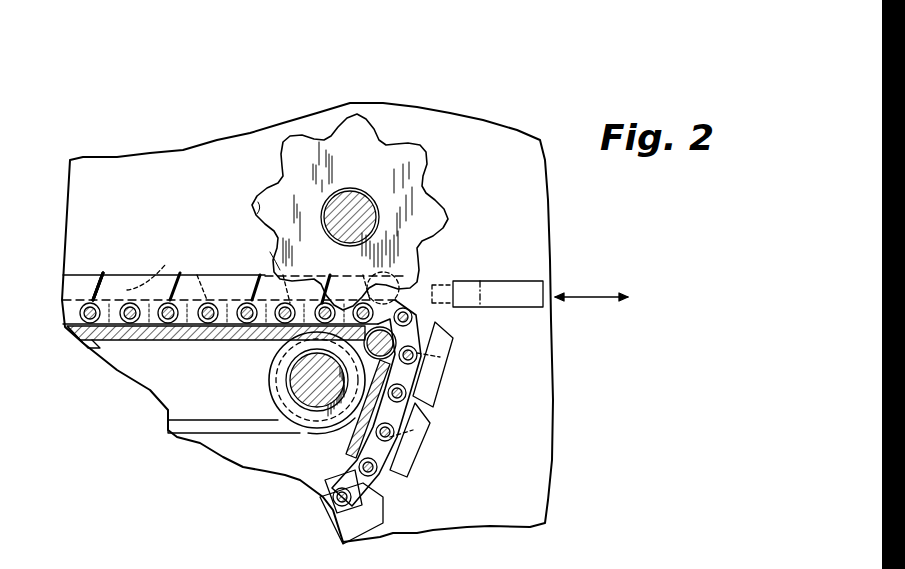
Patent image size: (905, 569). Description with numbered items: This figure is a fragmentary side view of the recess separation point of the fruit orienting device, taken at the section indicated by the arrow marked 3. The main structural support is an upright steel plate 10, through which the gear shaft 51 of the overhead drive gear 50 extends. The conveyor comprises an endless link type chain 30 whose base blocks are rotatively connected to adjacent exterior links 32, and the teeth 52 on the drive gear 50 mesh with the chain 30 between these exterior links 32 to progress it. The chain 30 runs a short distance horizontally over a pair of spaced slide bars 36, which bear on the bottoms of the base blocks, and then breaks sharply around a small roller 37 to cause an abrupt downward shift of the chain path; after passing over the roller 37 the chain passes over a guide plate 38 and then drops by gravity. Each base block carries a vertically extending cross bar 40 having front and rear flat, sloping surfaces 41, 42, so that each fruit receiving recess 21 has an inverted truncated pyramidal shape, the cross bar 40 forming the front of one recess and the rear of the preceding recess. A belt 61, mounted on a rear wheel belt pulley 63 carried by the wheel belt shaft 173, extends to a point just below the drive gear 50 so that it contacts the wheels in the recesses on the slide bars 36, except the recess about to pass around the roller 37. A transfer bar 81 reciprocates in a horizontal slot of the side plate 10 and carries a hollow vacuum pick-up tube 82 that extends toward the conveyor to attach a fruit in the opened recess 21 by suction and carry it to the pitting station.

The upright steel plate 10 is at (505, 156).
The section line for FIG. 3 is at (140, 262).
The fruit receiving recess 21 is at (220, 285).
The endless link type chain 30 is at (378, 473).
The exterior link 32 is at (105, 332).
The slide bar 36 is at (197, 342).
The small roller 37 is at (410, 347).
The guide plate 38 is at (362, 438).
The cross bar 40 is at (120, 295).
The front sloping surface 41 is at (152, 267).
The rear sloping surface 42 is at (100, 290).
The drive gear 50 is at (420, 228).
The gear shaft 51 is at (340, 210).
The teeth 52 is at (277, 265).
The belt 61 is at (275, 428).
The rear wheel belt pulley 63 is at (290, 360).
The wheel belt shaft 173 is at (305, 378).
The transfer bar 81 is at (498, 290).
The vacuum pick-up tube 82 is at (455, 283).